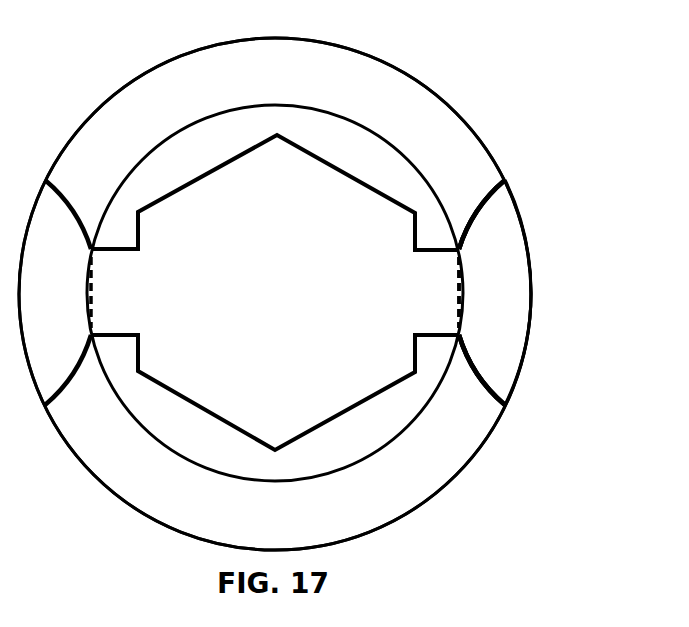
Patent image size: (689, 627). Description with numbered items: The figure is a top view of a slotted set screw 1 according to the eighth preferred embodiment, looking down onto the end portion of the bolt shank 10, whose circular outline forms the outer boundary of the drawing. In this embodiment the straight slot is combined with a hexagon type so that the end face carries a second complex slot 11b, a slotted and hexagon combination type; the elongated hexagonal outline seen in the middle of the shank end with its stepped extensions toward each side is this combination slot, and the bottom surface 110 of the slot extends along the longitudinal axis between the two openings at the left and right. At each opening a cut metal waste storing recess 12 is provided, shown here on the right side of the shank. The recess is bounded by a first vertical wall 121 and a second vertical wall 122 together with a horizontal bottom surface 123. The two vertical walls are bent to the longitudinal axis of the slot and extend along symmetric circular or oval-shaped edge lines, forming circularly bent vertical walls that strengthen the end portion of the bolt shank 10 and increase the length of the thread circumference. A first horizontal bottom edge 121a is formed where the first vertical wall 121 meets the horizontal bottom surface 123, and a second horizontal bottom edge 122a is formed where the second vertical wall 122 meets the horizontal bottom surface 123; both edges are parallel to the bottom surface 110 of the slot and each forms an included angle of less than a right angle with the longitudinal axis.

The slotted set screw 1 is at (476, 78).
The bolt shank 10 is at (377, 82).
The second complex slot 11b is at (290, 140).
The bottom surface 110 is at (328, 226).
The cut metal waste storing recess 12 is at (550, 306).
The first vertical wall 121 is at (490, 397).
The first horizontal bottom edge 121a is at (493, 378).
The second vertical wall 122 is at (482, 198).
The second horizontal bottom edge 122a is at (493, 204).
The horizontal bottom surface 123 is at (508, 293).